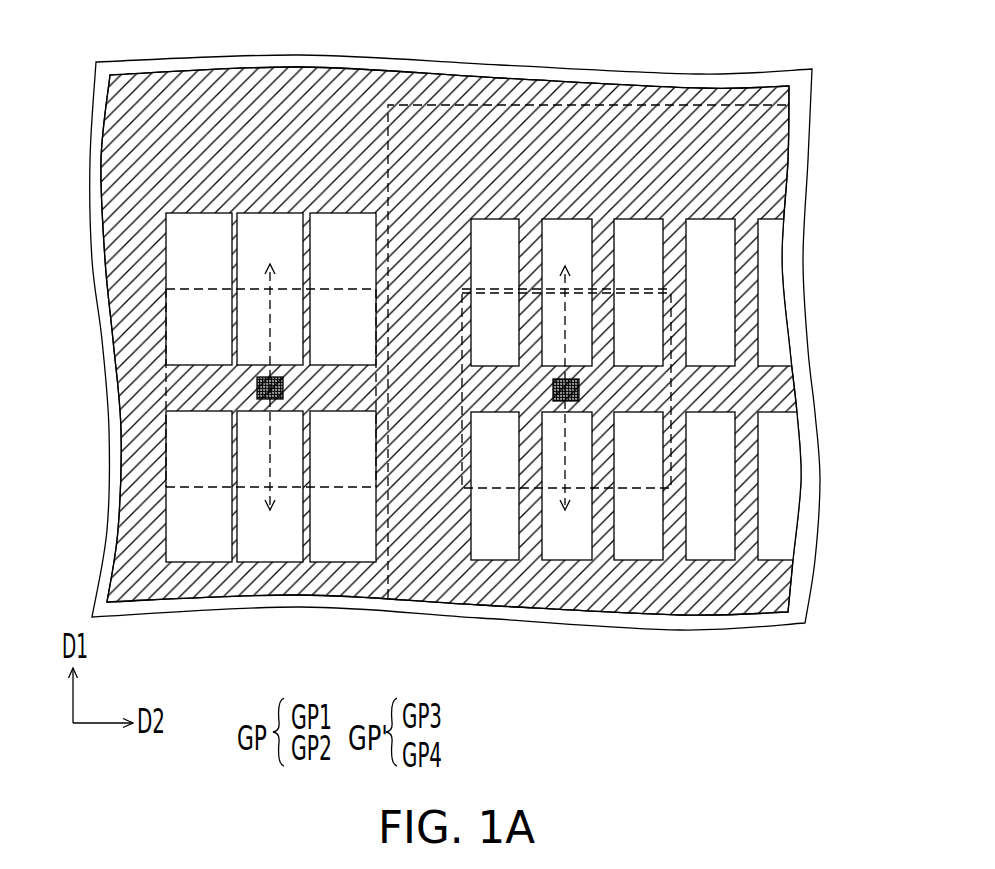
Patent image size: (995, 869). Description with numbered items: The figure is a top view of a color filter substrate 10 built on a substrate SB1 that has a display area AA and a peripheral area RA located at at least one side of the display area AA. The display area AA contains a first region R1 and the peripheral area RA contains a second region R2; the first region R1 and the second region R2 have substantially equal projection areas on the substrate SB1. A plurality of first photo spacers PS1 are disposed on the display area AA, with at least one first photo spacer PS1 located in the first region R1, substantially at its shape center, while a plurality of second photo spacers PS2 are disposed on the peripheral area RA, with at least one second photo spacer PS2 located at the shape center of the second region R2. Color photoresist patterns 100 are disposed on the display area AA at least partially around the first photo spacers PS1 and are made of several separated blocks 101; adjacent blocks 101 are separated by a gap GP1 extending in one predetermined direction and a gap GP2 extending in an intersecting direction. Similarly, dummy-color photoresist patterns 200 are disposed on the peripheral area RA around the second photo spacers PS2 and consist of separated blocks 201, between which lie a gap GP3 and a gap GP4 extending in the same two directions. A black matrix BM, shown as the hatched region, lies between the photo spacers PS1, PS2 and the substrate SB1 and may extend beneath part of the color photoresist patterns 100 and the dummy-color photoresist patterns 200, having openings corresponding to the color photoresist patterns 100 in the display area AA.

The color filter substrate 10 is at (457, 375).
The color photoresist patterns 100 is at (666, 451).
The blocks 101 is at (650, 463).
The dummy-color photoresist patterns 200 is at (206, 387).
The blocks 201 is at (183, 327).
The substrate SB1 is at (108, 535).
The black matrix BM is at (132, 475).
The display area AA is at (744, 190).
The peripheral area RA is at (232, 123).
The first region R1 is at (485, 490).
The second region R2 is at (165, 378).
The first photo spacers PS1 is at (580, 400).
The second photo spacers PS2 is at (255, 392).
The gap GP1 is at (676, 220).
The gap GP2 is at (708, 393).
The gap GP3 is at (307, 213).
The gap GP4 is at (357, 390).